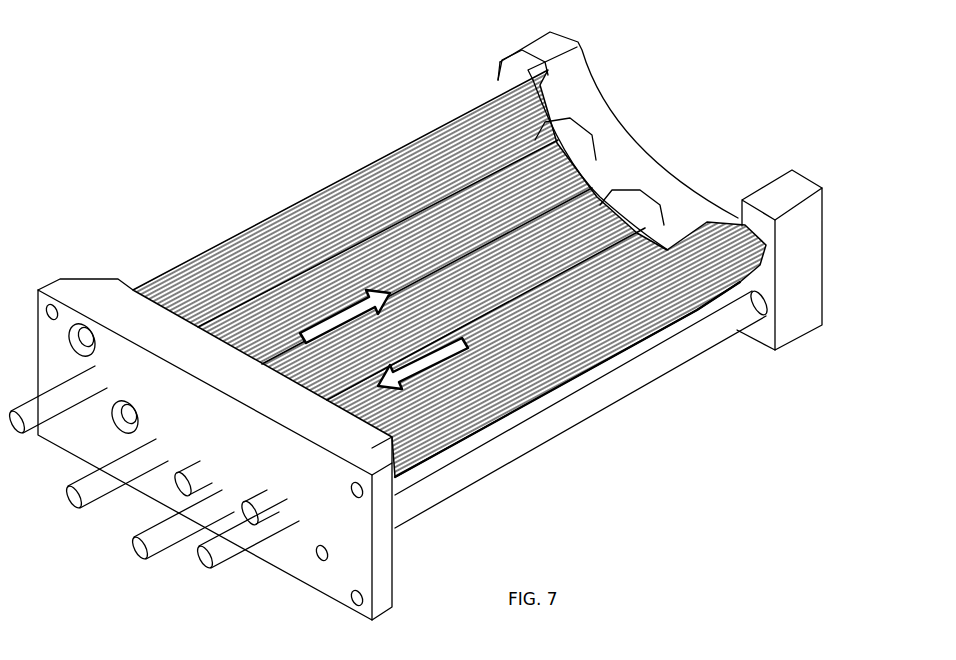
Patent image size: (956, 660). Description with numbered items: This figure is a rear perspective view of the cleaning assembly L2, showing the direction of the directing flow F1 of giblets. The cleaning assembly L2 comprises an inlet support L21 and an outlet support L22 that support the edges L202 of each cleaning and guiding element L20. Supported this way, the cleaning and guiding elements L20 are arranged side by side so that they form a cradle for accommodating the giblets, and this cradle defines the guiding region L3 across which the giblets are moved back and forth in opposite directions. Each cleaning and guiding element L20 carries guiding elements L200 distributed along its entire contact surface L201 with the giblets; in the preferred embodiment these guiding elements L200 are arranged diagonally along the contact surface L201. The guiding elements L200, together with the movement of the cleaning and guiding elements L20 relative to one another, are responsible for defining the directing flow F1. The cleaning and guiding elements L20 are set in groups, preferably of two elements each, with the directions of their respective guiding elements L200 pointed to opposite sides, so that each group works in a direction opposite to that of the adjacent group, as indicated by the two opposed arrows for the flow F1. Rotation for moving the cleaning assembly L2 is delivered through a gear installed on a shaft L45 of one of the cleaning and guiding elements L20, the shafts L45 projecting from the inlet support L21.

The cleaning assembly L2 is at (668, 506).
The cleaning and guiding element L20 is at (449, 259).
The guiding elements L200 is at (382, 237).
The contact surface L201 is at (533, 127).
The edges L202 is at (128, 420).
The inlet support L21 is at (295, 547).
The outlet support L22 is at (788, 303).
The guiding region L3 is at (618, 191).
The shaft L45 is at (27, 420).
The first directing flow F1 is at (447, 337).